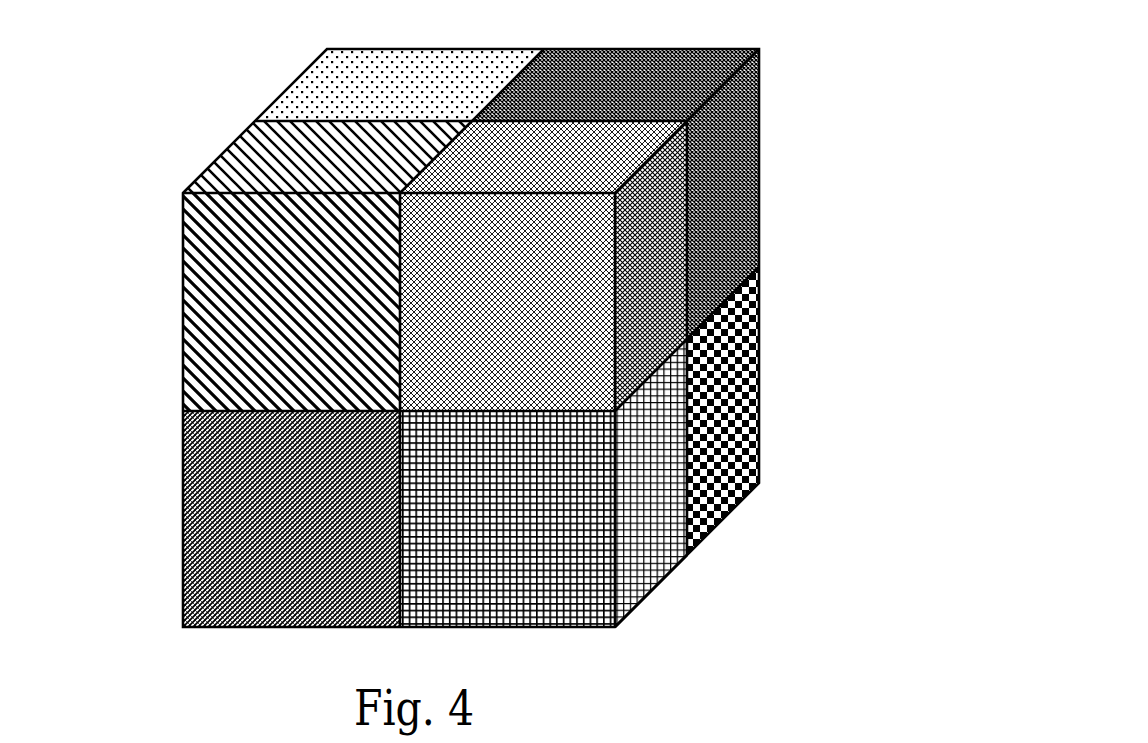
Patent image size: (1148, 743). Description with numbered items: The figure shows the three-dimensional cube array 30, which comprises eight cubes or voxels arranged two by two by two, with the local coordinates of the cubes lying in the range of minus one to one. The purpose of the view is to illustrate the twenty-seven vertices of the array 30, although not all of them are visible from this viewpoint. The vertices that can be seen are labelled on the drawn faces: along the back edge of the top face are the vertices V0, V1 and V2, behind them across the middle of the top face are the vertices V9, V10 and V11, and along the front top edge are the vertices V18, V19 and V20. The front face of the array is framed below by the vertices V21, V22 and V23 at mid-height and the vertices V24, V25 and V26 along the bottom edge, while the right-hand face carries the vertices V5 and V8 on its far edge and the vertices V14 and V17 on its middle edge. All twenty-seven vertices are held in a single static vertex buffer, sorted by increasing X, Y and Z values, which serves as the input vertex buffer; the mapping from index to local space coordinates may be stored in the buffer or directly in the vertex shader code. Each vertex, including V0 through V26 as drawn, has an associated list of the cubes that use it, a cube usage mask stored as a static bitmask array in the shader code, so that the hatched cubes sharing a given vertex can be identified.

The 3D array 30 is at (130, 126).
The vertex V0 is at (305, 29).
The vertex V1 is at (540, 29).
The vertex V2 is at (780, 29).
The vertex V5 is at (785, 270).
The vertex V8 is at (785, 485).
The vertex V9 is at (229, 104).
The vertex V10 is at (439, 99).
The vertex V11 is at (661, 99).
The vertex V14 is at (715, 362).
The vertex V17 is at (713, 576).
The vertex V18 is at (154, 193).
The vertex V19 is at (369, 171).
The vertex V20 is at (587, 171).
The vertex V21 is at (154, 410).
The vertex V22 is at (370, 385).
The vertex V23 is at (585, 385).
The vertex V24 is at (159, 649).
The vertex V25 is at (404, 649).
The vertex V26 is at (614, 649).